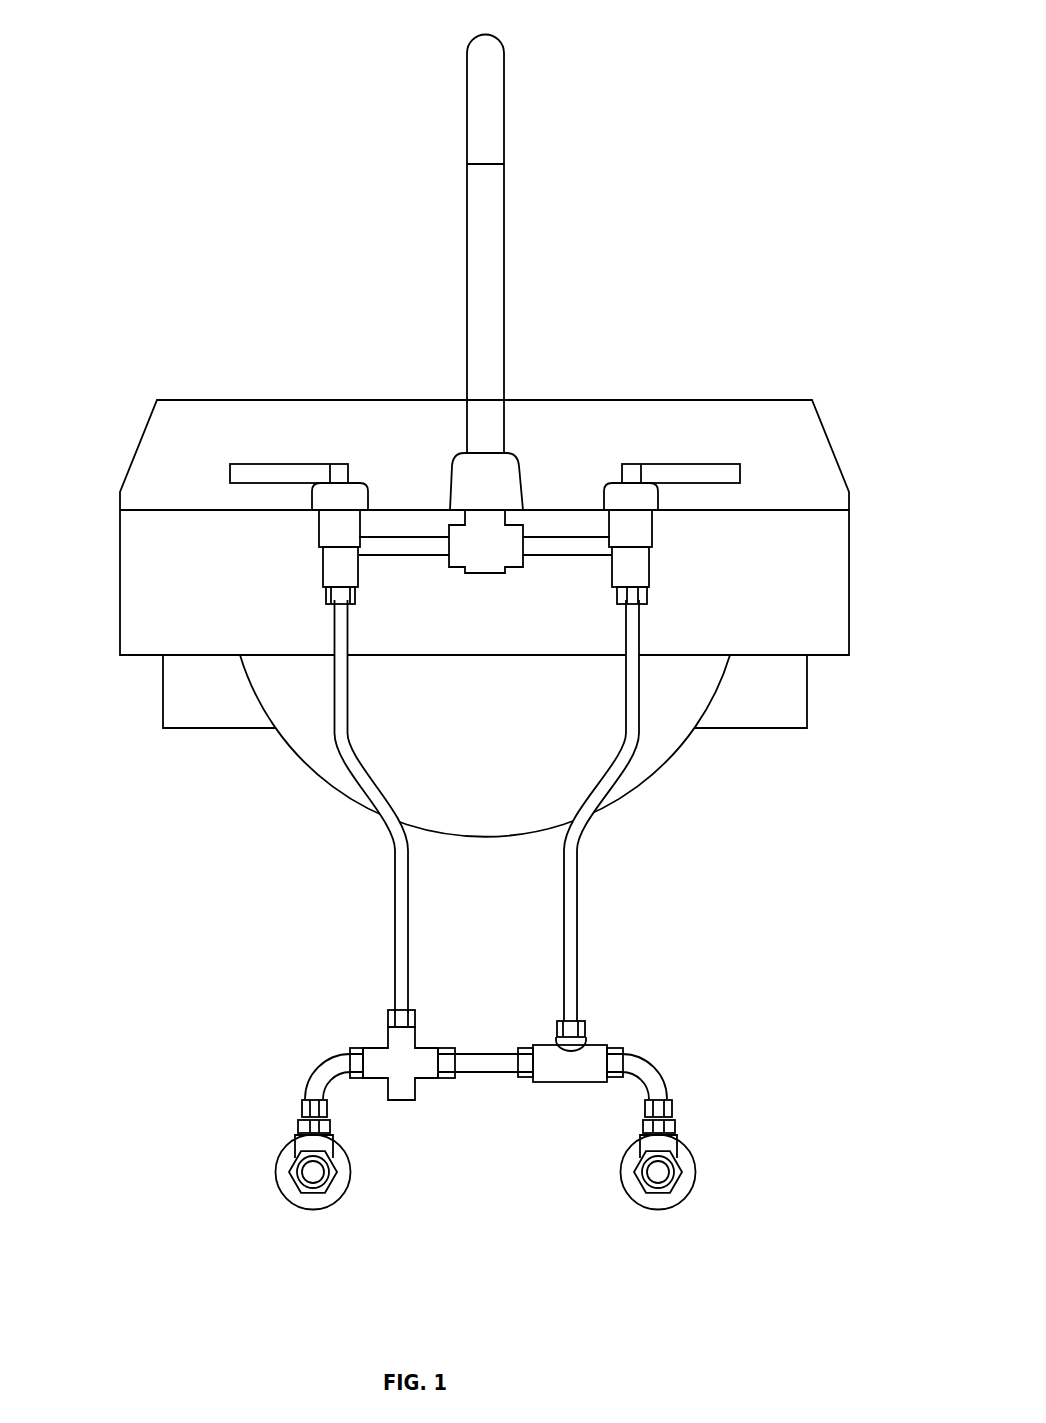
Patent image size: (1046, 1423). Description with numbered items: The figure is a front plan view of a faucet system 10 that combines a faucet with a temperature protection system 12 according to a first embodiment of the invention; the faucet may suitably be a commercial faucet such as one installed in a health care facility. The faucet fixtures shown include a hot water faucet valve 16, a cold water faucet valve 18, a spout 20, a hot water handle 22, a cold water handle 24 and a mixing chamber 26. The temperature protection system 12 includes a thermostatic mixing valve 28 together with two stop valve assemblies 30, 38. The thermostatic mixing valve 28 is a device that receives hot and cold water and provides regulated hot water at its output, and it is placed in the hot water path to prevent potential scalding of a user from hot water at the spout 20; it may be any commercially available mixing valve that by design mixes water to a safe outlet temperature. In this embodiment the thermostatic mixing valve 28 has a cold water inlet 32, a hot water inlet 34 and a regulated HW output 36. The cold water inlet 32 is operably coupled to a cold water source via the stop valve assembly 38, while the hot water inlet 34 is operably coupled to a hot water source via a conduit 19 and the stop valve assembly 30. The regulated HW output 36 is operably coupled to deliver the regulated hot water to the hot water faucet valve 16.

The faucet system 10 is at (735, 211).
The temperature protection system 12 is at (778, 899).
The hot water faucet valve 16 is at (320, 575).
The cold water faucet valve 18 is at (650, 573).
The conduit 19 is at (313, 1075).
The spout 20 is at (487, 65).
The hot water handle 22 is at (245, 473).
The cold water handle 24 is at (727, 473).
The mixing chamber 26 is at (510, 543).
The thermostatic mixing valve 28 is at (387, 1042).
The stop valve assembly 30 is at (303, 1193).
The cold water inlet 32 is at (463, 1077).
The hot water inlet 34 is at (355, 1077).
The regulated HW output 36 is at (417, 1010).
The stop valve assembly 38 is at (678, 1155).